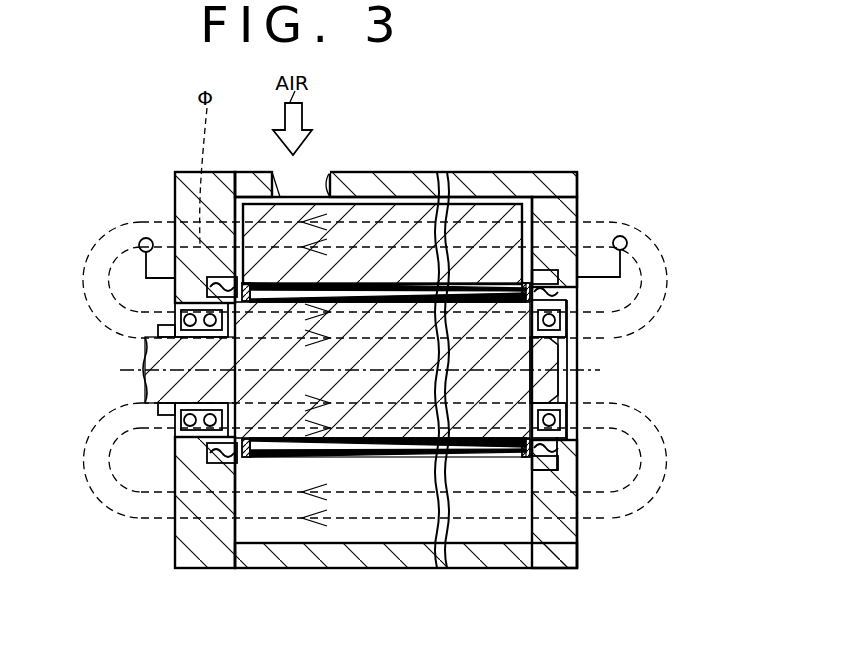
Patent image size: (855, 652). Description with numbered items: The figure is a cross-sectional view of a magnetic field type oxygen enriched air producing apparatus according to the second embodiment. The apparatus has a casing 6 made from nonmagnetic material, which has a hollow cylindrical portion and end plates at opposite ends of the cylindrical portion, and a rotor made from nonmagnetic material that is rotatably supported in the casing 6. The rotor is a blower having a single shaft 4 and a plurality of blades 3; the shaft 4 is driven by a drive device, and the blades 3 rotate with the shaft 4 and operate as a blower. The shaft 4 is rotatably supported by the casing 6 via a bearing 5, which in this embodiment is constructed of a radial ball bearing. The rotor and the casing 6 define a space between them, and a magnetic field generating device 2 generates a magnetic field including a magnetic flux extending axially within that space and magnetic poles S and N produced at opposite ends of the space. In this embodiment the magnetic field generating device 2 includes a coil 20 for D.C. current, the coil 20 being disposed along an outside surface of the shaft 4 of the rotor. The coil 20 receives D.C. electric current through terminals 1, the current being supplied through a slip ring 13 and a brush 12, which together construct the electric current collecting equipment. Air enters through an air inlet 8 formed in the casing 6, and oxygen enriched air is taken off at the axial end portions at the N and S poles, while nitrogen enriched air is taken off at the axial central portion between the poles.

The terminals 1 is at (146, 236).
The magnetic field generating device 2 is at (390, 275).
The blades 3 is at (492, 250).
The shaft 4 is at (150, 388).
The bearing 5 is at (173, 313).
The casing 6 is at (567, 193).
The air inlet 8 is at (335, 188).
The brush 12 is at (175, 312).
The slip ring 13 is at (195, 279).
The coil 20 is at (490, 285).